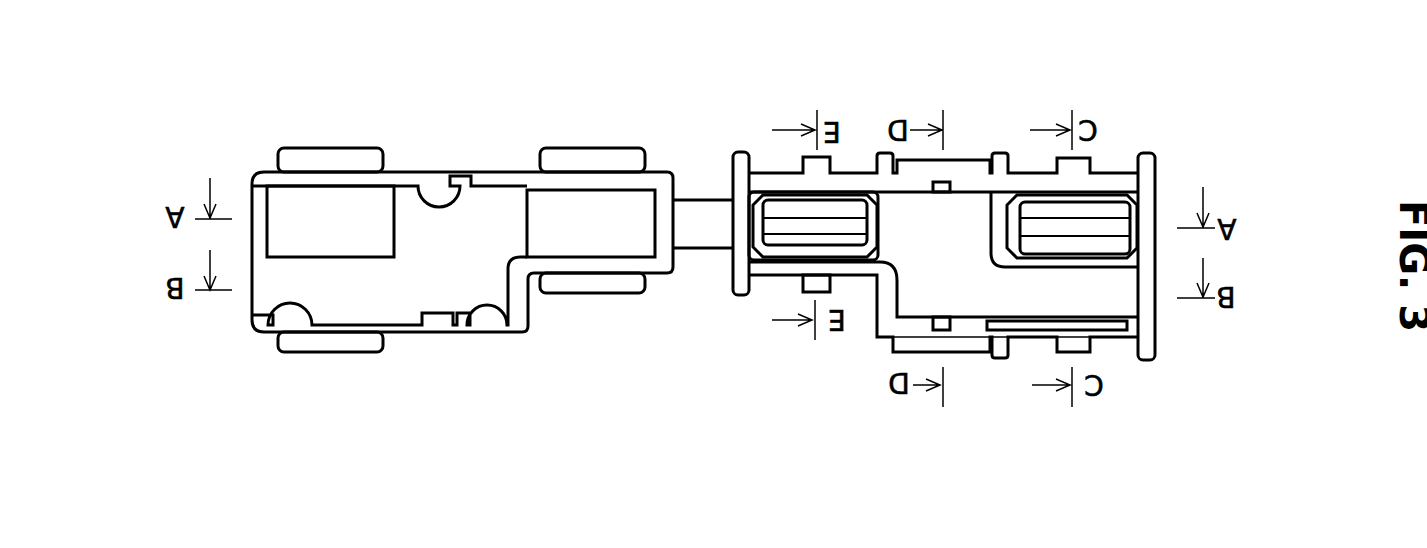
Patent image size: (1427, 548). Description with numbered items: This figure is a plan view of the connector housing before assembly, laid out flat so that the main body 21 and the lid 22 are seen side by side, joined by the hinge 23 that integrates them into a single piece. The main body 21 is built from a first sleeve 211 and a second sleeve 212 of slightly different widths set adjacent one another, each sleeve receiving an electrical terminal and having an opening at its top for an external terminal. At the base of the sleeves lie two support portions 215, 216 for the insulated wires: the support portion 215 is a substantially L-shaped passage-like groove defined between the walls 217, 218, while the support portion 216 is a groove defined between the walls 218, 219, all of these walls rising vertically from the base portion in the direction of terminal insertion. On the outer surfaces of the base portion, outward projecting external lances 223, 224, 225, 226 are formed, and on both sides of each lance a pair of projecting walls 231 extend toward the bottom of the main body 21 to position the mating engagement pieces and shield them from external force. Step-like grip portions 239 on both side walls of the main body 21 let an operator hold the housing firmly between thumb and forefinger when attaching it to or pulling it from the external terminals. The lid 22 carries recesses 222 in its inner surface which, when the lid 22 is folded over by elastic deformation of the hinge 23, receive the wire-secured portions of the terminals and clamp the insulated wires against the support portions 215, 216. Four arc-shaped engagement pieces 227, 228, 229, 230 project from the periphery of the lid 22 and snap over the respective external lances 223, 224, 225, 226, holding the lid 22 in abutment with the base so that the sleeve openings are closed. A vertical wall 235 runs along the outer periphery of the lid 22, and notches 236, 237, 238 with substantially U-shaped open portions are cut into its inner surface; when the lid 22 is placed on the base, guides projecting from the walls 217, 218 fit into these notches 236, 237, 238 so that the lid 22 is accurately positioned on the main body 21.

The main body 21 is at (885, 320).
The lid 22 is at (449, 345).
The hinge 23 is at (695, 250).
The first sleeve 211 is at (773, 220).
The second sleeve 212 is at (1143, 220).
The support portion 215 is at (1123, 310).
The support portion 216 is at (1145, 245).
The wall 217 is at (1133, 355).
The wall 218 is at (1143, 273).
The wall 219 is at (1120, 173).
The recesses 222 is at (297, 207).
The external lance 223 is at (803, 292).
The external lance 224 is at (1090, 352).
The external lance 225 is at (802, 156).
The external lance 226 is at (1057, 158).
The arc-shaped engagement piece 227 is at (317, 352).
The arc-shaped engagement piece 228 is at (568, 293).
The arc-shaped engagement piece 229 is at (330, 148).
The arc-shaped engagement piece 230 is at (573, 148).
The projecting walls 231 is at (735, 152).
The vertical wall 235 is at (500, 172).
The notch 236 is at (256, 330).
The notch 237 is at (500, 333).
The notch 238 is at (417, 186).
The step-like grip portion 239 is at (915, 160).